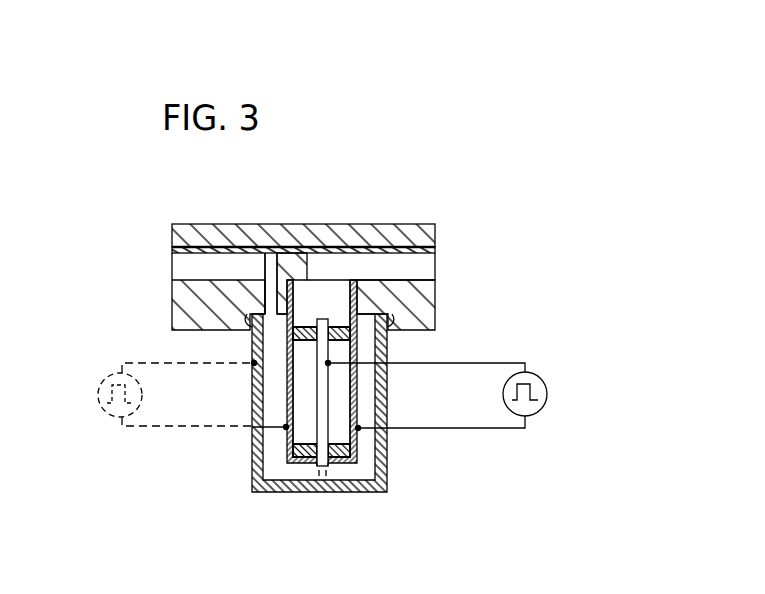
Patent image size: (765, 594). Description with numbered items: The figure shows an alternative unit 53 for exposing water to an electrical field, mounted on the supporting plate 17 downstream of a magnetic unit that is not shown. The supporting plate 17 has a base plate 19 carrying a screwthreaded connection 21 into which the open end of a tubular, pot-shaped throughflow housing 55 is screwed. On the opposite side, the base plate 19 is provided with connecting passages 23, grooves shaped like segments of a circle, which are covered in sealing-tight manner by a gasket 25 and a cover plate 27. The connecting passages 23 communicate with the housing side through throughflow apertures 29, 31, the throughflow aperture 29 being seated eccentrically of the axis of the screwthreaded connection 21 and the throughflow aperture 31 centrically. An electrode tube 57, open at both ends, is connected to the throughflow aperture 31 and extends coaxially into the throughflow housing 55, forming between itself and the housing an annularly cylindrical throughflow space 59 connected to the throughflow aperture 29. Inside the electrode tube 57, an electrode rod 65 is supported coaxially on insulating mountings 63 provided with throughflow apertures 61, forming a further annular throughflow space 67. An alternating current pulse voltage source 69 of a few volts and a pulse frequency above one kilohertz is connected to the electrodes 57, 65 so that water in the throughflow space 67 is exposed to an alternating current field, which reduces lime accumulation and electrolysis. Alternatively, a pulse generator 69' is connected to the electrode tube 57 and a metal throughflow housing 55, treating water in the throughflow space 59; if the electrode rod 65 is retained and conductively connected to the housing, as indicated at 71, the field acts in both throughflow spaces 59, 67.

The supporting plate 17 is at (424, 197).
The base plate 19 is at (432, 304).
The screwthreaded connection 21 is at (251, 315).
The connecting passage 23 is at (177, 268).
The gasket 25 is at (434, 250).
The cover plate 27 is at (434, 233).
The throughflow aperture 29 is at (270, 250).
The throughflow aperture 31 is at (337, 297).
The unit for exposing the water to an electrical field 53 is at (243, 482).
The throughflow housing 55 is at (388, 459).
The electrode tube 57 is at (355, 380).
The throughflow space 59 is at (276, 443).
The throughflow apertures 61 is at (343, 479).
The insulating mountings 63 is at (298, 464).
The electrode rod 65 is at (323, 408).
The throughflow space 67 is at (343, 348).
The alternating current pulse voltage source 69 is at (454, 384).
The pulse generator 69' is at (165, 398).
The electrically conductive connection 71 is at (312, 493).